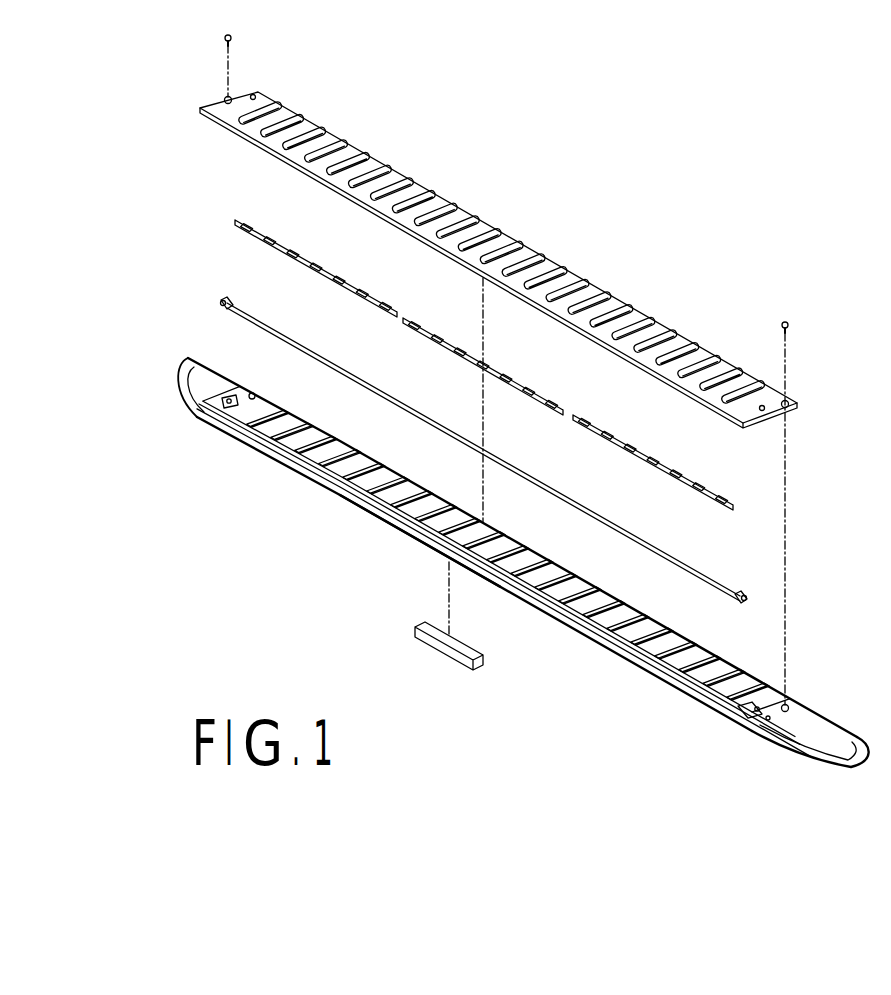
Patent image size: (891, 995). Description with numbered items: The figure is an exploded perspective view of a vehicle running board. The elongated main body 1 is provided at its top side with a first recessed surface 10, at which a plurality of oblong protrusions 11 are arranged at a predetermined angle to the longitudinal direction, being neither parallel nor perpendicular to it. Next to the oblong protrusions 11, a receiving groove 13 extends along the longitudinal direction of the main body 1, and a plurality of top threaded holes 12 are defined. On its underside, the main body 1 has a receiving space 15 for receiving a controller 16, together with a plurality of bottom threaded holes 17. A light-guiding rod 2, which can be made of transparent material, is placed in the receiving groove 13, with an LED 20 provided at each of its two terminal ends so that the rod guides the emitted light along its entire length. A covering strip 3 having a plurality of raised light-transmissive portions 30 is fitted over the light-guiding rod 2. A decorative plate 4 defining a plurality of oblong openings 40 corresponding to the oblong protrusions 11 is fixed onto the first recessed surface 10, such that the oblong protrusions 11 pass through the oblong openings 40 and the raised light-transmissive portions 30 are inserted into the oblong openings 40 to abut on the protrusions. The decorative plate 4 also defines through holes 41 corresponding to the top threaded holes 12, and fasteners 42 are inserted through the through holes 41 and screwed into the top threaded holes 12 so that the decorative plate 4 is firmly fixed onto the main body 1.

The main body 1 is at (523, 562).
The light-guiding rod 2 is at (580, 520).
The covering strip 3 is at (333, 288).
The decorative plate 4 is at (503, 240).
The first recessed surface 10 is at (348, 455).
The oblong protrusions 11 is at (393, 478).
The top threaded holes 12 is at (788, 704).
The receiving groove 13 is at (637, 652).
The receiving space 15 is at (398, 529).
The controller 16 is at (463, 668).
The bottom threaded holes 17 is at (760, 722).
The LED 20 is at (225, 297).
The raised light-transmissive portions 30 is at (327, 262).
The oblong openings 40 is at (410, 193).
The through holes 41 is at (227, 97).
The fasteners 42 is at (235, 42).